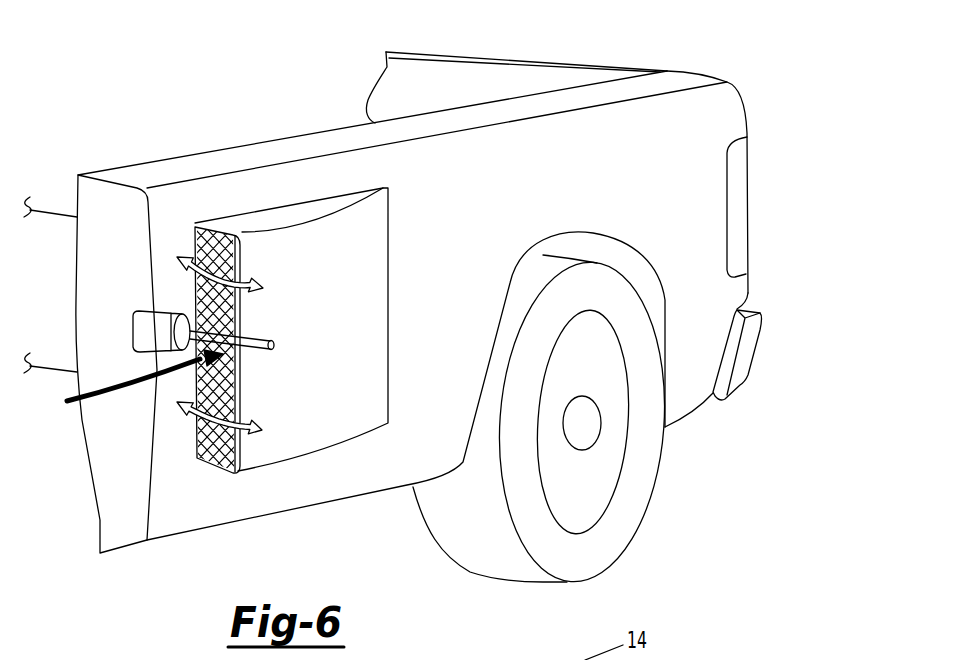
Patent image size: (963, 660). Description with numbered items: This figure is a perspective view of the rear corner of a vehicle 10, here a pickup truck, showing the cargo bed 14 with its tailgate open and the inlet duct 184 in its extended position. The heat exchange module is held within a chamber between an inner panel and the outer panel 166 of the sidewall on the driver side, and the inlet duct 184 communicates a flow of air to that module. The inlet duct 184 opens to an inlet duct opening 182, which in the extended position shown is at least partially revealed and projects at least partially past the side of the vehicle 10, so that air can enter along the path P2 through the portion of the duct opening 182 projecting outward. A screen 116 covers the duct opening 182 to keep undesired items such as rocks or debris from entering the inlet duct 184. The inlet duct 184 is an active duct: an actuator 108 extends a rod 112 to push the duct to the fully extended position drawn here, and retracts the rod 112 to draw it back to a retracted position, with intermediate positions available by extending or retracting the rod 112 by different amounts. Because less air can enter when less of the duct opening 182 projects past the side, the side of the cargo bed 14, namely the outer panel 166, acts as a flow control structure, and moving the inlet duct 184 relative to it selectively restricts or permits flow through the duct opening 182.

The vehicle 10 is at (683, 403).
The cargo bed 14 is at (441, 92).
The actuator 108 is at (137, 330).
The rod 112 is at (250, 353).
The screen 116 is at (193, 237).
The outer panel 166 is at (570, 198).
The inlet duct opening 182 is at (213, 453).
The inlet duct 184 is at (335, 339).
The path P2 is at (125, 387).